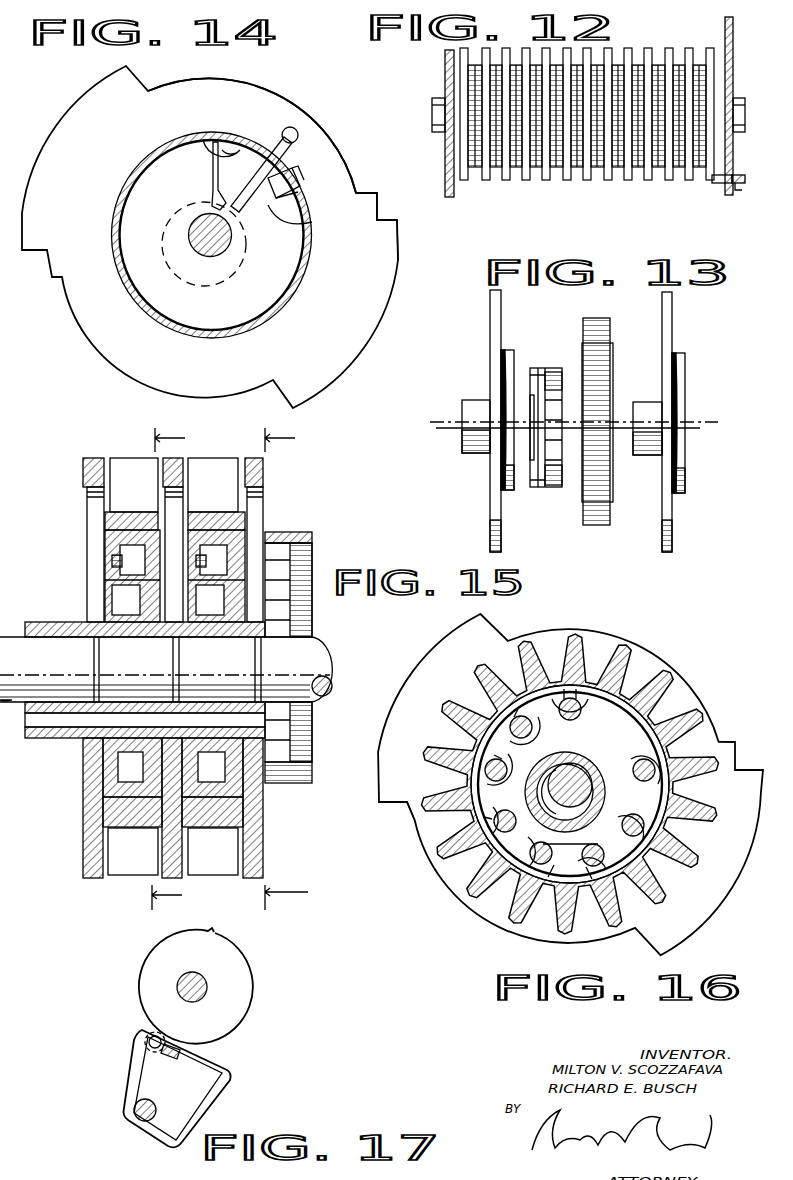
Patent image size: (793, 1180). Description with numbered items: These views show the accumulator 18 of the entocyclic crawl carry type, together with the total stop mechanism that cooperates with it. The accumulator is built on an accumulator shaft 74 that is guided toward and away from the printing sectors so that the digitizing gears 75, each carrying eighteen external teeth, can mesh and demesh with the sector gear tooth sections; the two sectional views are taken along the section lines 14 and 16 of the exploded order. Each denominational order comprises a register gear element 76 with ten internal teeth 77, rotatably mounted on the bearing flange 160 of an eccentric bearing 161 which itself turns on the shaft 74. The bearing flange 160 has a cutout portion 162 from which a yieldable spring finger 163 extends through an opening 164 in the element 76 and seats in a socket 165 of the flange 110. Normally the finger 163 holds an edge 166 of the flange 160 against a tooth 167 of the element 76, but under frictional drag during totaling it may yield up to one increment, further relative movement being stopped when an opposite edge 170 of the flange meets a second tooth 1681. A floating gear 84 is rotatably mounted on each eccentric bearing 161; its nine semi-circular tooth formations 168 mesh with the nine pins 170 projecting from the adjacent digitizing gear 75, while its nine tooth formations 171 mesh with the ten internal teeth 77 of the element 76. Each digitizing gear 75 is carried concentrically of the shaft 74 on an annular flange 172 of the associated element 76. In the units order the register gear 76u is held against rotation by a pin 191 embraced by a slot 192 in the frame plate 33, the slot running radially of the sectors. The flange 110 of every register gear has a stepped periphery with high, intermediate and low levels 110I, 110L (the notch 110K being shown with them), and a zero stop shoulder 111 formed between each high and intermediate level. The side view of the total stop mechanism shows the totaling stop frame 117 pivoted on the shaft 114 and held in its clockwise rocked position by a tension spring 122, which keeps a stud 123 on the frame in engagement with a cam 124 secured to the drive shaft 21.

In FIG. 12, the accumulator 18 is at (643, 49).
In FIG. 12, the frame plate 33 is at (733, 30).
In FIG. 12, the register gear in units denominational order 76u is at (704, 183).
In FIG. 12, the pin 191 is at (730, 183).
In FIG. 12, the slot 192 is at (737, 191).
In FIG. 13, the eccentric bearing 161 is at (476, 391).
In FIG. 15, the eccentric bearing 161 is at (40, 738).
In FIG. 16, the eccentric bearing 161 is at (472, 822).
In FIG. 13, the annular flange 172 is at (508, 492).
In FIG. 15, the annular flange 172 is at (262, 492).
In FIG. 14, the register gear element 76 is at (244, 74).
In FIG. 13, the register gear element 76 is at (678, 356).
In FIG. 15, the register gear element 76 is at (275, 855).
In FIG. 16, the register gear element 76 is at (428, 881).
In FIG. 13, the semi-circular tooth formations 168 is at (548, 368).
In FIG. 15, the semi-circular tooth formations 168 is at (118, 582).
In FIG. 16, the semi-circular tooth formations 168 is at (550, 895).
In FIG. 13, the tooth formations 171 is at (538, 368).
In FIG. 15, the tooth formations 171 is at (115, 568).
In FIG. 16, the tooth formations 171 is at (540, 888).
In FIG. 13, the floating gear 84 is at (546, 500).
In FIG. 15, the floating gear 84 is at (115, 600).
In FIG. 16, the floating gear 84 is at (654, 771).
In FIG. 13, the digitizing gear 75 is at (597, 317).
In FIG. 15, the digitizing gear 75 is at (210, 463).
In FIG. 16, the digitizing gear 75 is at (602, 660).
In FIG. 14, the flange 110 is at (385, 272).
In FIG. 14, the low levels 110L is at (364, 193).
In FIG. 14, the intermediate levels 110I is at (378, 208).
In FIG. 14, the zero stop shoulder 111 is at (392, 216).
In FIG. 16, the zero stop shoulder 111 is at (393, 817).
In FIG. 14, the plate notch 110K is at (398, 232).
In FIG. 14, the bearing flange 160 is at (190, 181).
In FIG. 15, the bearing flange 160 is at (290, 780).
In FIG. 14, the accumulator shaft 74 is at (227, 240).
In FIG. 15, the accumulator shaft 74 is at (325, 679).
In FIG. 16, the accumulator shaft 74 is at (570, 785).
In FIG. 14, the pins 170 is at (215, 194).
In FIG. 15, the pins 170 is at (130, 548).
In FIG. 16, the pins 170 is at (636, 702).
In FIG. 14, the cutout portion 162 is at (246, 140).
In FIG. 14, the second tooth 1681 is at (214, 142).
In FIG. 16, the second tooth 1681 is at (614, 699).
In FIG. 14, the socket 165 is at (297, 135).
In FIG. 14, the spring finger 163 is at (286, 155).
In FIG. 15, the spring finger 163 is at (258, 516).
In FIG. 14, the opening 164 is at (294, 170).
In FIG. 15, the opening 164 is at (265, 527).
In FIG. 14, the tooth 167 is at (299, 192).
In FIG. 16, the tooth 167 is at (652, 721).
In FIG. 14, the edge 166 is at (312, 224).
In FIG. 15, the section line 16— 16 is at (182, 669).
In FIG. 15, the section line 14— 14 is at (295, 669).
In FIG. 15, the internal teeth 77 is at (292, 580).
In FIG. 16, the internal teeth 77 is at (540, 655).
In FIG. 17, the cam 124 is at (142, 978).
In FIG. 17, the drive shaft 21 is at (202, 984).
In FIG. 17, the totaling stop frame 117 is at (205, 1098).
In FIG. 17, the shaft 114 is at (134, 1116).
In FIG. 17, the stud 123 is at (146, 1045).
In FIG. 17, the tension spring 122 is at (172, 1062).